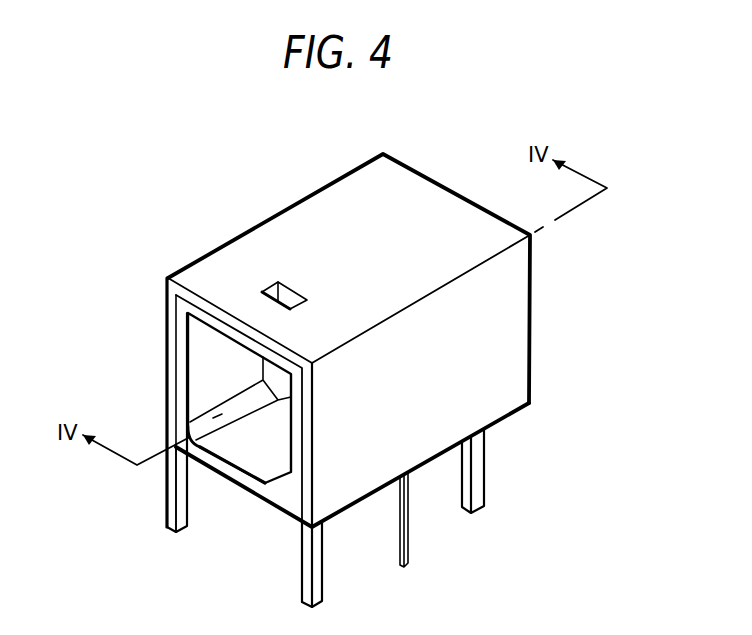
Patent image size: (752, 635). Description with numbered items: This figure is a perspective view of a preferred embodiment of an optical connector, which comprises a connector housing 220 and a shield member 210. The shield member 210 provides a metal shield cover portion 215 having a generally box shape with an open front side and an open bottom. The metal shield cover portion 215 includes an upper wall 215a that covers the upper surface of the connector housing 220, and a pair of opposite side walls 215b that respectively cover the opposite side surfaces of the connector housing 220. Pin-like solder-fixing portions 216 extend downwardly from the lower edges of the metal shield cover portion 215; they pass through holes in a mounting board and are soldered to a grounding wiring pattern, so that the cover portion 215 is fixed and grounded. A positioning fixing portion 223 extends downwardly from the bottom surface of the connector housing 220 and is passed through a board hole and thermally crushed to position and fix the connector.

The shield member 210 is at (311, 193).
The metal shield cover portion 215 is at (435, 207).
The upper wall 215a is at (383, 263).
The side walls 215b is at (440, 399).
The solder-fixing portions 216 is at (165, 512).
The connector housing 220 is at (268, 503).
The positioning fixing portion 223 is at (409, 540).